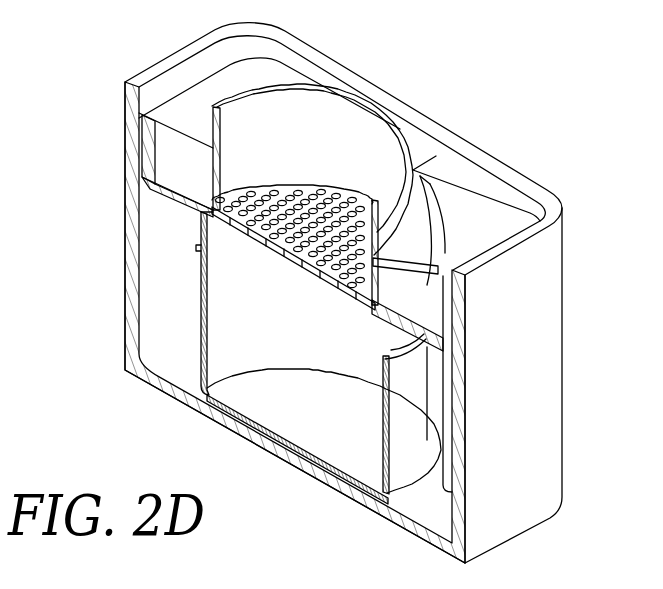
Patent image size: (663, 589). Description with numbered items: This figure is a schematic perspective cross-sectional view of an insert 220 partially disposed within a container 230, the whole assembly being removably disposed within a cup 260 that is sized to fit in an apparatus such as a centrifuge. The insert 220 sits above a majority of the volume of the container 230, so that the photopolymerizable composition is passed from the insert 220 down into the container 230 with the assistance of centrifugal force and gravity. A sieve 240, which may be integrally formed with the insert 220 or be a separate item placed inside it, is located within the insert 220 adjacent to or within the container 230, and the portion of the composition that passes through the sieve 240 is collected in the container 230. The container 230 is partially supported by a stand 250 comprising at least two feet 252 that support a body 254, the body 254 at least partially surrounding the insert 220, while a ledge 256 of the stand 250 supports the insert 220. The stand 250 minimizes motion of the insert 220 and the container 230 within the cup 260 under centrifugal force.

The insert 220 is at (358, 132).
The container 230 is at (230, 263).
The sieve 240 is at (277, 197).
The stand 250 is at (163, 185).
The feet 252 is at (437, 423).
The body 254 is at (443, 253).
The ledge 256 is at (375, 328).
The cup 260 is at (152, 297).